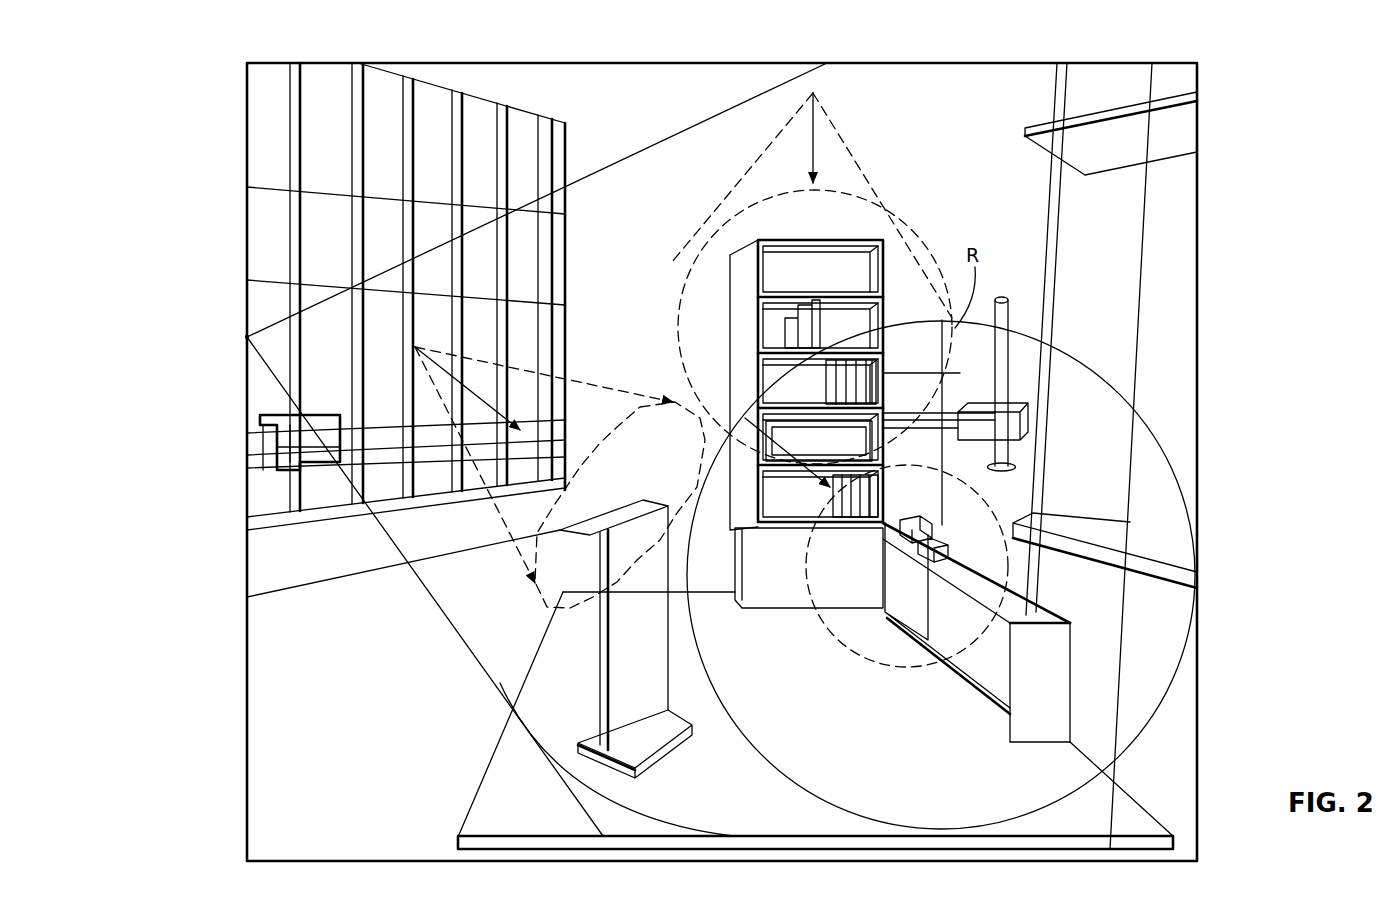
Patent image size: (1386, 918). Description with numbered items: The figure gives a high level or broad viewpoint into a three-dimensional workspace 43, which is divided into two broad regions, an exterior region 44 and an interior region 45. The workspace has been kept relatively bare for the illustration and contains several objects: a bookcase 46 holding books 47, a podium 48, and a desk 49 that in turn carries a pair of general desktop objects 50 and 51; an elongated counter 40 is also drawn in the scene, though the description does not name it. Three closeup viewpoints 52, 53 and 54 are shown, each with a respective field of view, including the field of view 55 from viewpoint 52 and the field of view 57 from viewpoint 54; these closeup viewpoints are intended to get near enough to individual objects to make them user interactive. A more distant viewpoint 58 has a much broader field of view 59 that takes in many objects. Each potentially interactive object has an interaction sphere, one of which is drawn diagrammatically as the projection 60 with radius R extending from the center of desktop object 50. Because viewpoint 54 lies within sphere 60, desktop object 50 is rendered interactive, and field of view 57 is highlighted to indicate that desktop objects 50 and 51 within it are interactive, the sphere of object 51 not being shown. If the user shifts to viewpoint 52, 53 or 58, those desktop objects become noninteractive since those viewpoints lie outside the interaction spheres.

The bench counter 40 is at (998, 600).
The workspace 43 is at (1017, 84).
The exterior region 44 is at (1167, 243).
The interior region 45 is at (768, 822).
The bookcase 46 is at (857, 238).
The books 47 is at (790, 332).
The podium 48 is at (648, 573).
The desk 49 is at (1040, 677).
The desktop object 50 is at (958, 545).
The desktop object 51 is at (878, 531).
The viewpoint 52 is at (815, 93).
The viewpoint 53 is at (415, 347).
The viewpoint 54 is at (733, 440).
The field of view 55 is at (927, 270).
The field of view 57 is at (587, 573).
The viewpoint 58 is at (247, 337).
The field of view 59 is at (730, 778).
The interaction sphere 60 is at (1058, 800).